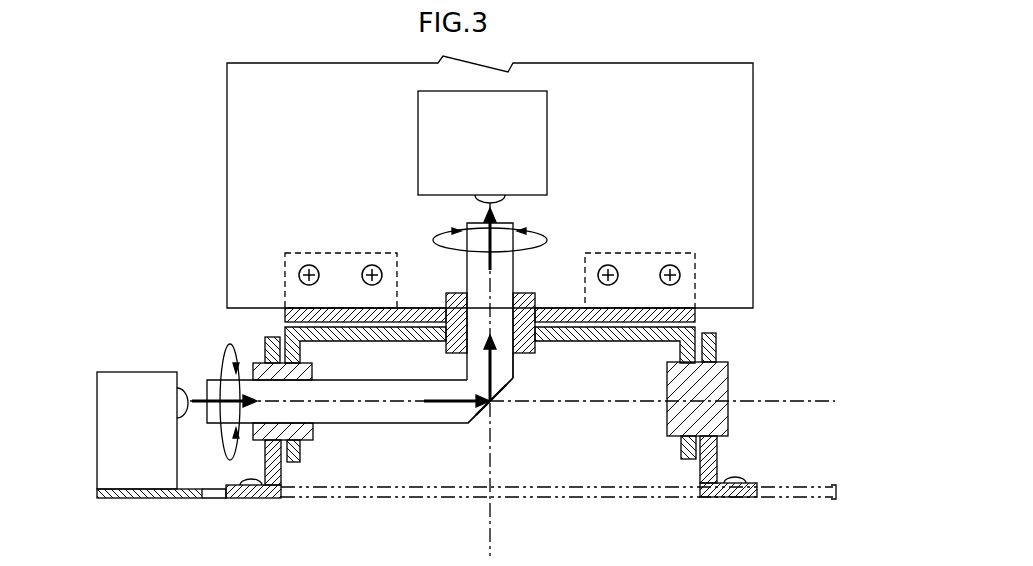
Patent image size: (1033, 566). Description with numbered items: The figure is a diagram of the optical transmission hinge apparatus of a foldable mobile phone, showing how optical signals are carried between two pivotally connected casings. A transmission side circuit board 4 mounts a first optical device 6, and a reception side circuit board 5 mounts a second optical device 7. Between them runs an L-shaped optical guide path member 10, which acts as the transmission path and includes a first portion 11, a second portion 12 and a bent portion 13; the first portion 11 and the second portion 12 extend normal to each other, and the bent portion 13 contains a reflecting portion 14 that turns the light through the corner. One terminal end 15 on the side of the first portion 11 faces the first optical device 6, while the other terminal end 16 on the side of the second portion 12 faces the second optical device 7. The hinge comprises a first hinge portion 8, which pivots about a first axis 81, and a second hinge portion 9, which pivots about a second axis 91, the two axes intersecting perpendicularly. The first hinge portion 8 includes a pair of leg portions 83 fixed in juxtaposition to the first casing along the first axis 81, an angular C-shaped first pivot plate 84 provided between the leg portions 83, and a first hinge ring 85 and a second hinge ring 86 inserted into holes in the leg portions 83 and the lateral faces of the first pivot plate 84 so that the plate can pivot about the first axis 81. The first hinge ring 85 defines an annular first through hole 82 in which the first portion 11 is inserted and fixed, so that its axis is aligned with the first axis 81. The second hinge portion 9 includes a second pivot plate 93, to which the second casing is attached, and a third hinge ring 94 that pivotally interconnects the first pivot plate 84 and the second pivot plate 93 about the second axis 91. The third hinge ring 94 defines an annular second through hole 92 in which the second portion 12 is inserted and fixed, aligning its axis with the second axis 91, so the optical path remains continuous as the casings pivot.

The transmission side circuit board 4 is at (130, 498).
The reception side circuit board 5 is at (250, 137).
The first optical device 6 is at (123, 385).
The second optical device 7 is at (522, 124).
The first hinge portion 8 is at (312, 449).
The second hinge portion 9 is at (447, 291).
The optical guide path member 10 is at (415, 427).
The first portion 11 is at (373, 424).
The second portion 12 is at (505, 268).
The bent portion 13 is at (481, 382).
The reflecting portion 14 is at (503, 396).
The one terminal end 15 is at (207, 383).
The other terminal end 16 is at (467, 223).
The first axis 81 is at (812, 396).
The first through hole 82 is at (250, 376).
The leg portions 83 is at (267, 483).
The first pivot plate 84 is at (627, 341).
The first hinge ring 85 is at (315, 379).
The second hinge ring 86 is at (678, 410).
The second axis 91 is at (498, 517).
The second through hole 92 is at (505, 336).
The second pivot plate 93 is at (638, 309).
The third hinge ring 94 is at (522, 303).